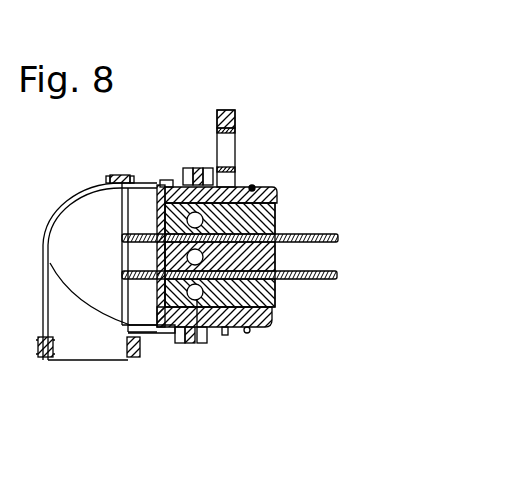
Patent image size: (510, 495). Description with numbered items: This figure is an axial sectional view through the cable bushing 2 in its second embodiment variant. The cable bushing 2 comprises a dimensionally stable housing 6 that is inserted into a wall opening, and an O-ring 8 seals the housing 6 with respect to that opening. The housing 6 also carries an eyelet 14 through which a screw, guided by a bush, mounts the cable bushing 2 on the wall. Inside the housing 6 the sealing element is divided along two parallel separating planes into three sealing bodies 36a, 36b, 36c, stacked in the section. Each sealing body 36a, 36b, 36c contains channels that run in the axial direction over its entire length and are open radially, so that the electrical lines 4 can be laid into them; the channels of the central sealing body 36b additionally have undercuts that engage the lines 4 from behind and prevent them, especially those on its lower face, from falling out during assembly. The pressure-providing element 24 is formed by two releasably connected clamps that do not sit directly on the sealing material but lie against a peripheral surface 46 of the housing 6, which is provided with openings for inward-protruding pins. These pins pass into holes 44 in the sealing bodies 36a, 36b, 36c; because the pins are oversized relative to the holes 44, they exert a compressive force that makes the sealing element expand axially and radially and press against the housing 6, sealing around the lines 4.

The cable bushing 2 is at (257, 60).
The electrical lines 4 is at (326, 238).
The housing 6 is at (225, 330).
The O-ring 8 is at (252, 186).
The eyelet 14 is at (218, 147).
The pressure-providing element 24 is at (175, 333).
The sealing body 36a is at (282, 215).
The central sealing body 36b is at (278, 257).
The sealing body 36c is at (272, 290).
The holes 44 is at (203, 335).
The peripheral surface 46 is at (177, 332).